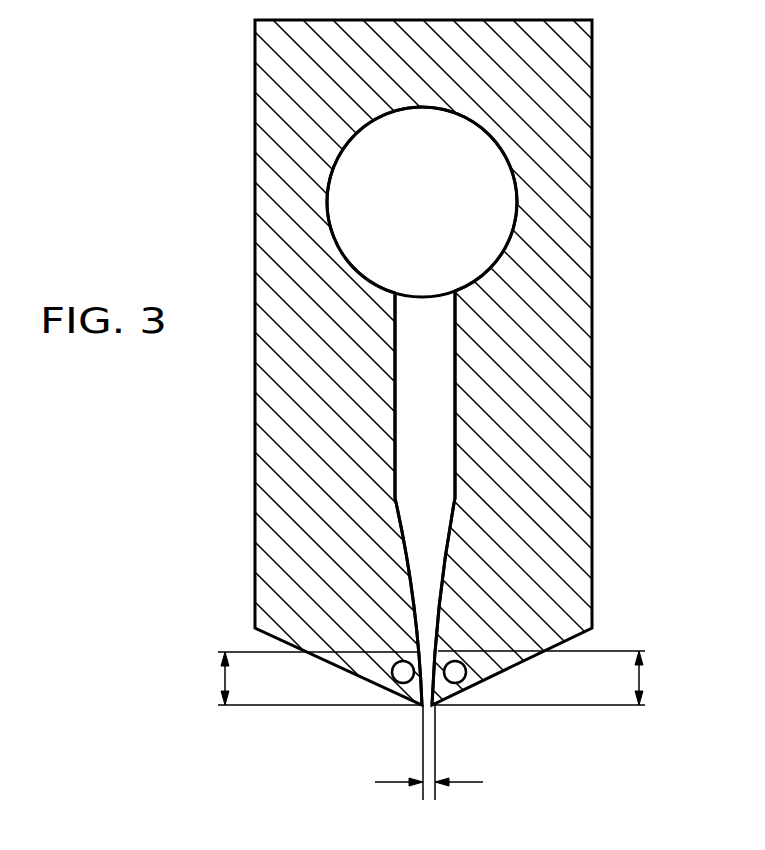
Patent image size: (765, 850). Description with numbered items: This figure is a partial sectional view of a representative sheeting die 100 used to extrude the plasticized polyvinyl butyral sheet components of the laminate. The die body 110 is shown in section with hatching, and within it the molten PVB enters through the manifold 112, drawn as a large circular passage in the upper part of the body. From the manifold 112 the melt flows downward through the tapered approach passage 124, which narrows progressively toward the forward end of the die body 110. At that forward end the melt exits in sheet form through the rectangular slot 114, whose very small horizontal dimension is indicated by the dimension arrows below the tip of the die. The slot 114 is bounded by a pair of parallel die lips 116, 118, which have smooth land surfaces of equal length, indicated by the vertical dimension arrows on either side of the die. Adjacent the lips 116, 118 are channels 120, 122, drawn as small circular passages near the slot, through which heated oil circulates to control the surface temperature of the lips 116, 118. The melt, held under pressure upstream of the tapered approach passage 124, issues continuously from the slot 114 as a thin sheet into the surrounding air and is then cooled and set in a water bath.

The sheeting die 100 is at (712, 463).
The die body 110 is at (585, 348).
The manifold 112 is at (502, 215).
The rectangular slot 114 is at (478, 784).
The die lip 116 is at (639, 678).
The die lip 118 is at (225, 680).
The channel 120 is at (459, 678).
The channel 122 is at (408, 681).
The tapered approach passage 124 is at (437, 513).